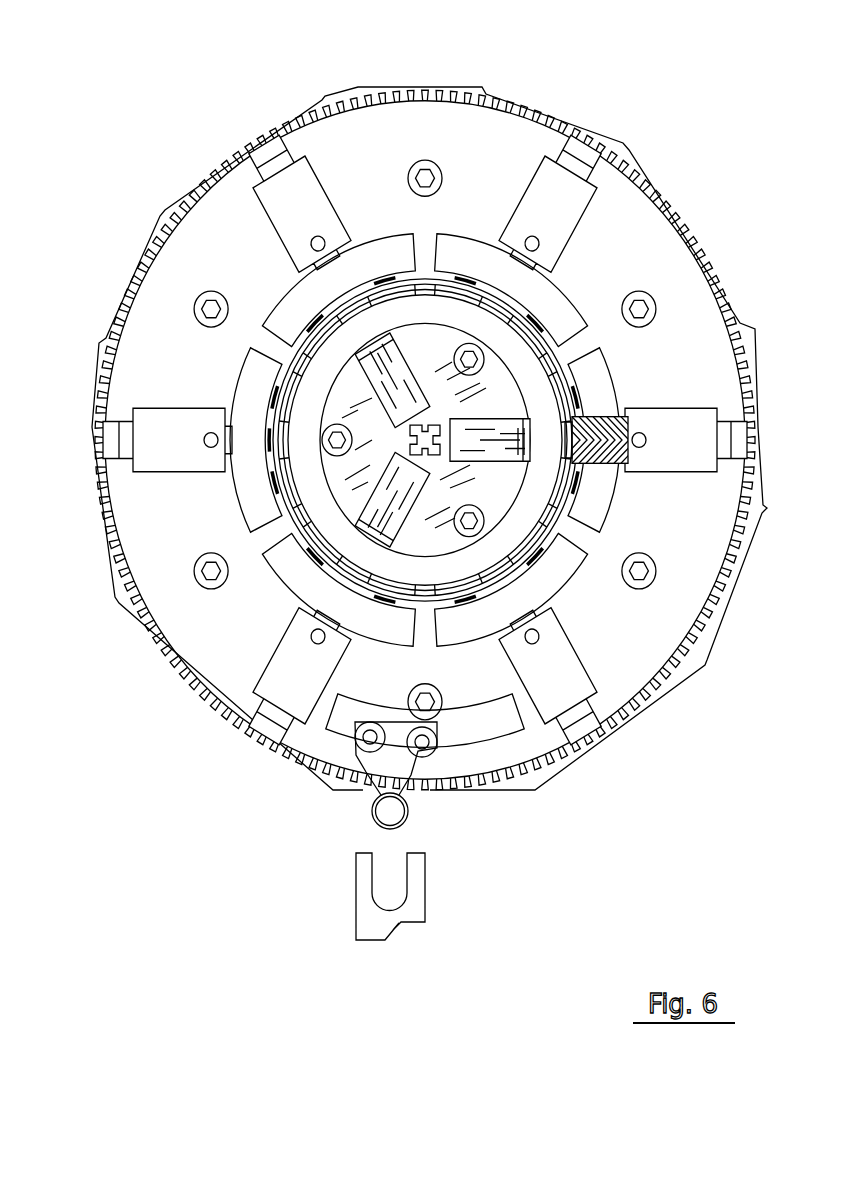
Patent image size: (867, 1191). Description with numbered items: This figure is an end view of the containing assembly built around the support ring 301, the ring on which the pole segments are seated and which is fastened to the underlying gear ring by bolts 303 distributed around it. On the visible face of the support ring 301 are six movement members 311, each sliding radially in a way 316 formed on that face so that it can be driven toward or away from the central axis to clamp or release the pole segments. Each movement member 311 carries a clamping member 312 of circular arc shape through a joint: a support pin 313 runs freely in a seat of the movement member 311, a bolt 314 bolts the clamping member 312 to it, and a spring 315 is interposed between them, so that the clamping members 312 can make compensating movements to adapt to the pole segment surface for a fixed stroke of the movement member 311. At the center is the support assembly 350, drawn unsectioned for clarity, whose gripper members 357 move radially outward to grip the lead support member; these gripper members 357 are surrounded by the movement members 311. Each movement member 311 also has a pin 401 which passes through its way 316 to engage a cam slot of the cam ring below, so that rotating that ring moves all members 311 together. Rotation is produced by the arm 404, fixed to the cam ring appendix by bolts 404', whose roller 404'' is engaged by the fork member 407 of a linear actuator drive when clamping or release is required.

The support ring 301 is at (492, 128).
The bolts 303 is at (643, 572).
The movement member 311 is at (575, 683).
The clamping member 312 is at (425, 615).
The support pin 313 is at (622, 422).
The bolt 314 is at (536, 450).
The spring 315 is at (535, 322).
The way 316 is at (578, 728).
The support assembly 350 is at (497, 393).
The gripper member 357 is at (372, 530).
The pin 401 is at (532, 636).
The arm 404 is at (356, 777).
The bolts 404' is at (430, 792).
The roller 404'' is at (337, 843).
The fork member 407 is at (400, 917).